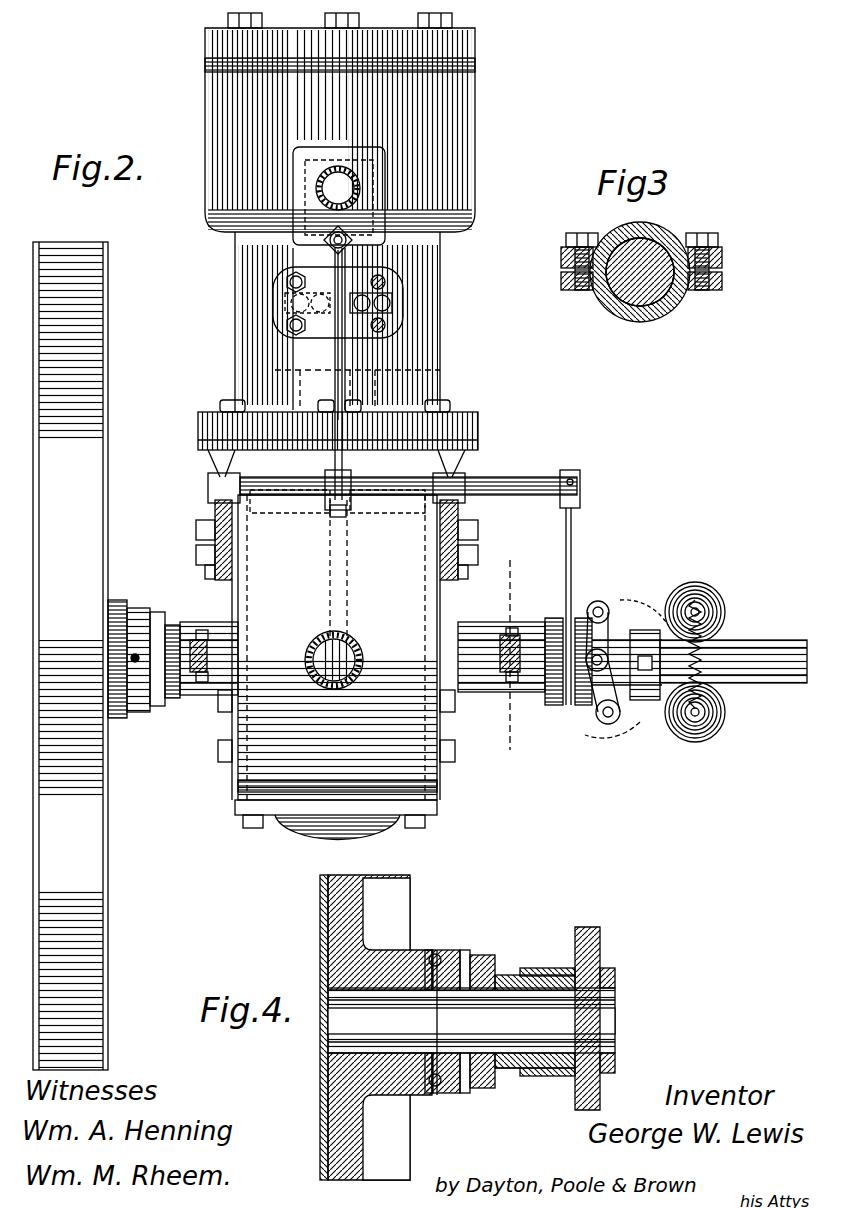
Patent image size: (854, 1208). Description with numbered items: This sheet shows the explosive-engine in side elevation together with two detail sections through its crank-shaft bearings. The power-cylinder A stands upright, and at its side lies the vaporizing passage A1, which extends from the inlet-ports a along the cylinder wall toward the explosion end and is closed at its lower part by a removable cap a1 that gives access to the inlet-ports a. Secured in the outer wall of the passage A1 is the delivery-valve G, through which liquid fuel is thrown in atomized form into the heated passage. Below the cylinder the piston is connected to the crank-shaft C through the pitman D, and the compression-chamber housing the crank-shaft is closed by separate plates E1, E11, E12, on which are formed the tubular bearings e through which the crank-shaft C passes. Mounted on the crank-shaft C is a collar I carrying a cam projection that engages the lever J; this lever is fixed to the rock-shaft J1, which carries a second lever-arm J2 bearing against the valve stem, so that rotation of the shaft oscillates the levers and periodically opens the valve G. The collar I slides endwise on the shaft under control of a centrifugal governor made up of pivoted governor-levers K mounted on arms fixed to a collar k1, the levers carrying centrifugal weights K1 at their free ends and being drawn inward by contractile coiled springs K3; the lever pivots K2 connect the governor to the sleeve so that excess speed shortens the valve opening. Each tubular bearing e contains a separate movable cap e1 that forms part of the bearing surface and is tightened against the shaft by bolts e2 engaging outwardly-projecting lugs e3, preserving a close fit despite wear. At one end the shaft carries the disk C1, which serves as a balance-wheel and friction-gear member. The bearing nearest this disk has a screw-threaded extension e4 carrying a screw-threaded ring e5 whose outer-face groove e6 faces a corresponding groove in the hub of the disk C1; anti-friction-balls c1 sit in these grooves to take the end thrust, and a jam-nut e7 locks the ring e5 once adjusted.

In FIG. 2, the power-cylinder A is at (340, 122).
In FIG. 2, the vaporizing passage A1 is at (362, 255).
In FIG. 2, the inlet-ports a is at (392, 303).
In FIG. 2, the removable cap a1 is at (285, 303).
In FIG. 2, the delivery-valve G is at (324, 240).
In FIG. 2, the lever J is at (570, 608).
In FIG. 2, the rock-shaft J1 is at (354, 319).
In FIG. 2, the second lever-arm J2 is at (335, 358).
In FIG. 2, the separate plates E1 is at (336, 667).
In FIG. 2, the frame base plate E11 is at (238, 788).
In FIG. 4, the frame base plate E11 is at (600, 948).
In FIG. 2, the frame side plate E12 is at (338, 185).
In FIG. 2, the pitman D is at (348, 640).
In FIG. 2, the crank-shaft C is at (762, 650).
In FIG. 3, the crank-shaft C is at (640, 295).
In FIG. 4, the crank-shaft C is at (395, 1110).
In FIG. 2, the disk C1 is at (70, 656).
In FIG. 4, the disk C1 is at (376, 1027).
In FIG. 4, the anti-friction-balls c1 is at (432, 1095).
In FIG. 2, the tubular bearings e is at (200, 622).
In FIG. 3, the tubular bearings e is at (672, 312).
In FIG. 4, the tubular bearings e is at (545, 1070).
In FIG. 2, the movable cap e1 is at (205, 628).
In FIG. 3, the movable cap e1 is at (652, 245).
In FIG. 4, the movable cap e1 is at (535, 968).
In FIG. 2, the bolts e2 is at (207, 648).
In FIG. 3, the bolts e2 is at (578, 240).
In FIG. 2, the lugs e3 is at (207, 676).
In FIG. 3, the lugs e3 is at (561, 280).
In FIG. 2, the screw-threaded extension e4 is at (172, 700).
In FIG. 4, the screw-threaded extension e4 is at (490, 955).
In FIG. 2, the screw-threaded ring e5 is at (137, 718).
In FIG. 4, the screw-threaded ring e5 is at (448, 950).
In FIG. 4, the groove e6 is at (468, 965).
In FIG. 4, the jam-nut e7 is at (495, 1080).
In FIG. 2, the collar I is at (540, 622).
In FIG. 2, the governor-levers K is at (662, 600).
In FIG. 2, the centrifugal weights K1 is at (708, 596).
In FIG. 2, the lever K2 is at (605, 724).
In FIG. 2, the contractile coiled springs K3 is at (702, 660).
In FIG. 2, the collar k1 is at (645, 665).